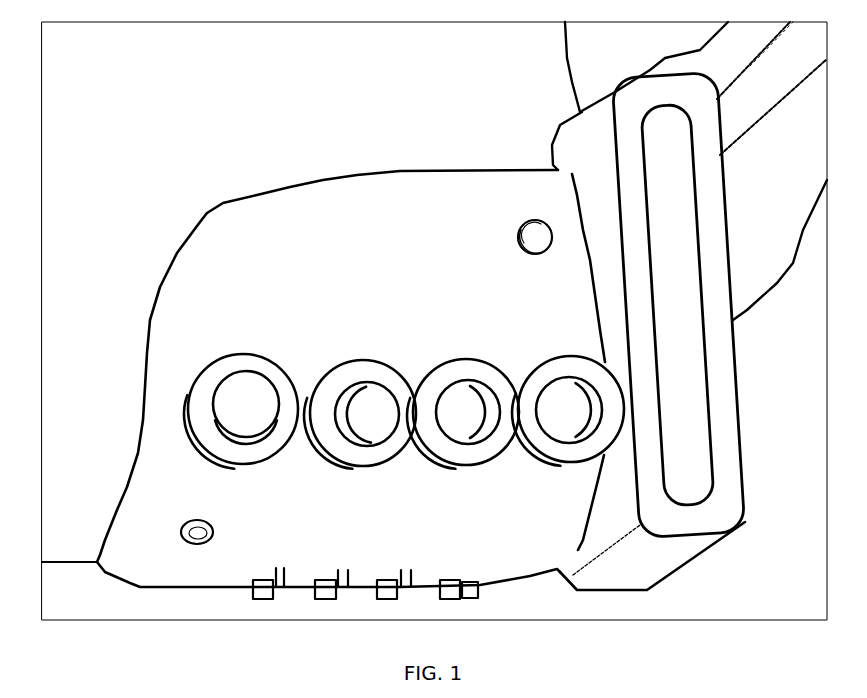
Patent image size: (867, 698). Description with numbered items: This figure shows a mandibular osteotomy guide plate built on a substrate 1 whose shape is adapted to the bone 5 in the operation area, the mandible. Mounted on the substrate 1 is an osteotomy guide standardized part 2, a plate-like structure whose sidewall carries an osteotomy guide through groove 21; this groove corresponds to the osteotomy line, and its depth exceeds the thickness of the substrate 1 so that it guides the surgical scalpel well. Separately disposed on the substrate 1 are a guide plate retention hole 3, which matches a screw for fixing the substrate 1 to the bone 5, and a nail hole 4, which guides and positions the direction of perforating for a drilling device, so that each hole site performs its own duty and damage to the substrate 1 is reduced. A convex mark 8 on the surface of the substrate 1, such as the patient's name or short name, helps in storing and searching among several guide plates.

The substrate 1 is at (394, 206).
The osteotomy guide standardized part 2 is at (655, 560).
The guide plate retention hole 3 is at (533, 230).
The nail hole 4 is at (243, 410).
The bone in the operation area 5 is at (603, 58).
The convex mark 8 is at (238, 277).
The osteotomy guide through groove 21 is at (688, 406).